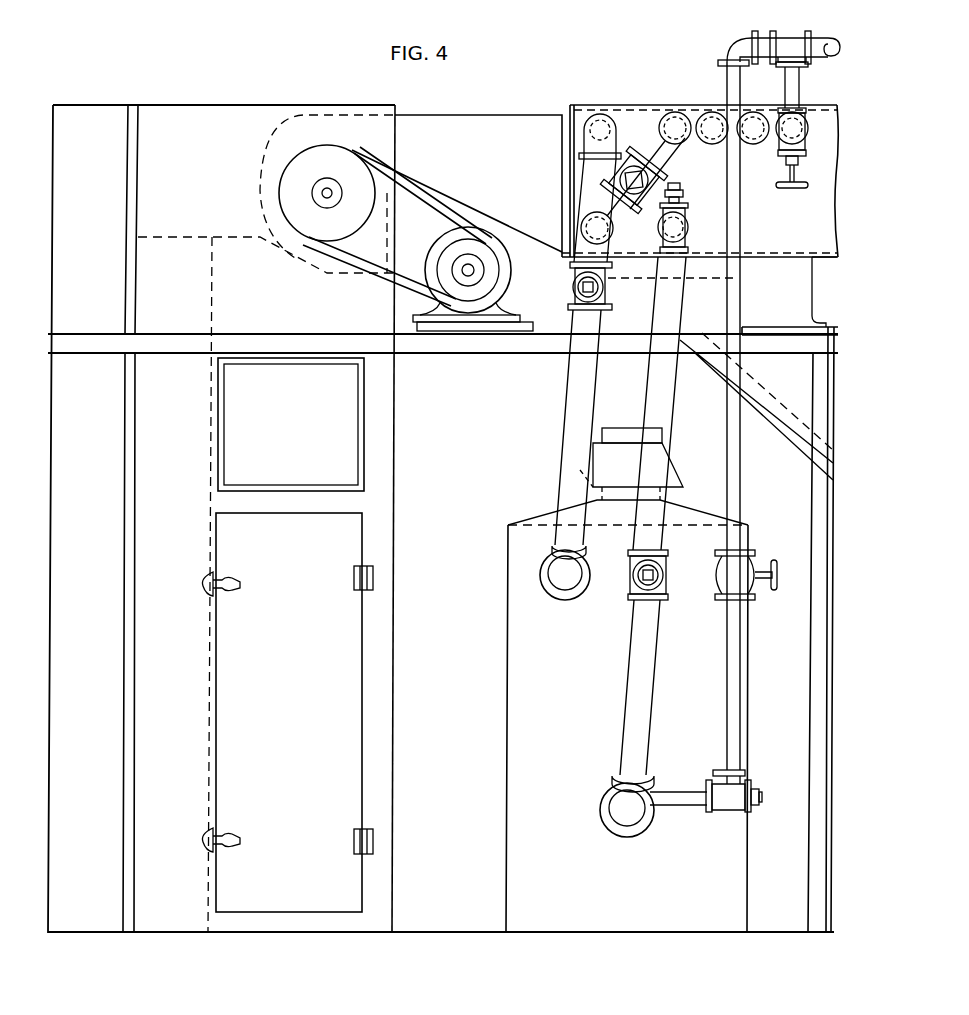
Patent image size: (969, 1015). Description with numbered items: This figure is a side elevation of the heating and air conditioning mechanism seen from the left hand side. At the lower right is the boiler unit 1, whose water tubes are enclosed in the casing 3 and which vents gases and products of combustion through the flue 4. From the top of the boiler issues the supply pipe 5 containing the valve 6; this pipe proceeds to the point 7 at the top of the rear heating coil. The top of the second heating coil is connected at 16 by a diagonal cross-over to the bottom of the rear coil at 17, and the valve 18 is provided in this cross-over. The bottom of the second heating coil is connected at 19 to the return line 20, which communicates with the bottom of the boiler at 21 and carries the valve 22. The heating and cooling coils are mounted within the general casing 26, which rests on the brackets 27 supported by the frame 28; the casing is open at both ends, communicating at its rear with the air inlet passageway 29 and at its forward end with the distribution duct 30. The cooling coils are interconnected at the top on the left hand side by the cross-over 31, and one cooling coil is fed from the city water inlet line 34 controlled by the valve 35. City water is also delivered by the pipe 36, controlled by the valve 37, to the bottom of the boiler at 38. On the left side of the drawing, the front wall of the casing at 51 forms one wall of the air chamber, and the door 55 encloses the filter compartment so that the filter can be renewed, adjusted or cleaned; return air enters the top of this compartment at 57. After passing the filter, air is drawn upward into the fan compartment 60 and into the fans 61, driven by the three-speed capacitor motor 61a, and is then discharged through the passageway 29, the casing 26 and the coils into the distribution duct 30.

The boiler unit 1 is at (505, 775).
The casing 3 is at (535, 682).
The flue 4 is at (620, 436).
The supply pipe 5 is at (570, 410).
The valve 6 is at (573, 283).
The point 7 is at (601, 124).
The connection 16 is at (676, 118).
The connection 17 is at (614, 233).
The valve 18 is at (667, 177).
The connection 19 is at (690, 233).
The return line 20 is at (656, 388).
The connection 21 is at (613, 822).
The valve 22 is at (628, 578).
The casing 26 is at (646, 108).
The brackets 27 is at (812, 307).
The frame 28 is at (815, 637).
The air inlet passageway 29 is at (462, 130).
The distribution duct 30 is at (835, 224).
The cross-over 31 is at (746, 147).
The city water inlet line 34 is at (828, 52).
The valve 35 is at (796, 190).
The pipe 36 is at (742, 457).
The valve 37 is at (721, 581).
The connection 38 is at (651, 790).
The front wall of the casing 51 is at (393, 638).
The door 55 is at (349, 750).
The inlet 57 is at (354, 439).
The fan compartment 60 is at (212, 110).
The fans 61 is at (292, 125).
The capacitor motor 61a is at (488, 235).